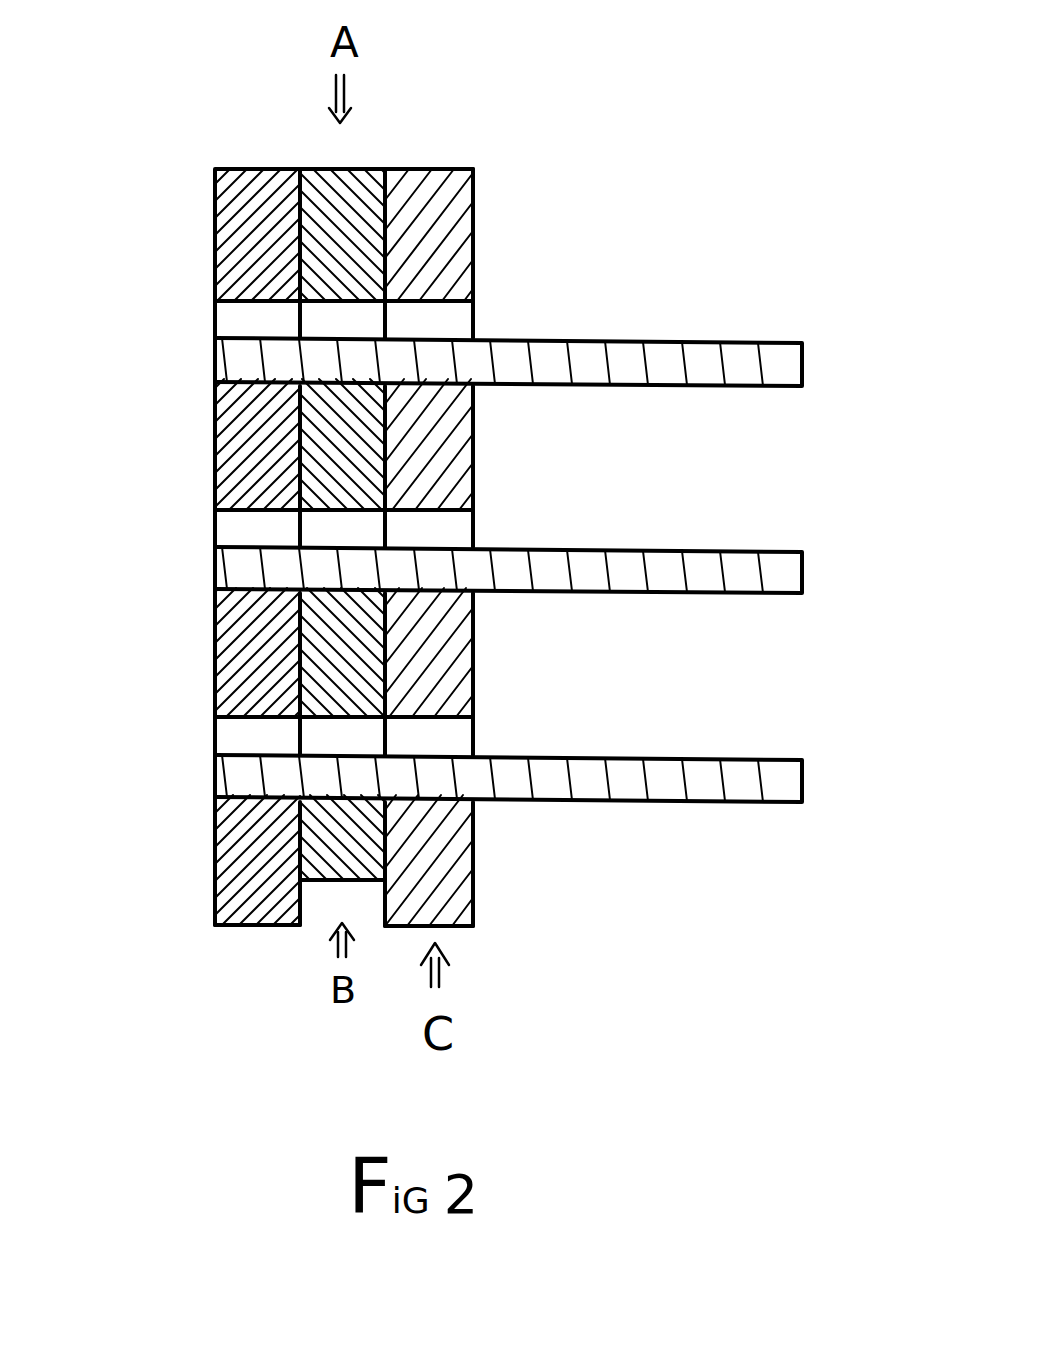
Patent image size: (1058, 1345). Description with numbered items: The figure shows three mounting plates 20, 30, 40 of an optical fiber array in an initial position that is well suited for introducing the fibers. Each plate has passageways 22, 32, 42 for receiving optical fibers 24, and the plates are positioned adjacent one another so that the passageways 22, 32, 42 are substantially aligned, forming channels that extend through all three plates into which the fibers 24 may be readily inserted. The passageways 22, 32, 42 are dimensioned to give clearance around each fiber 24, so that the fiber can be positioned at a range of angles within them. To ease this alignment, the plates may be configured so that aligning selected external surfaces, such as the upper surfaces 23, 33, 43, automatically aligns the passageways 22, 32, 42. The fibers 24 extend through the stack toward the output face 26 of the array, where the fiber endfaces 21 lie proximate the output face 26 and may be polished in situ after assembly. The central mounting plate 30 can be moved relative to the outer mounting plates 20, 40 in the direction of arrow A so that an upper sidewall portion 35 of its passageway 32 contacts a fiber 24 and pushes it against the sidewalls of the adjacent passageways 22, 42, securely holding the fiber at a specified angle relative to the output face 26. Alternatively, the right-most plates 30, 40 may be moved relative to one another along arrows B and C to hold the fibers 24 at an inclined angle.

The mounting plate 20 is at (215, 235).
The fiber endface 21 is at (215, 578).
The passageway 22 is at (237, 318).
The upper surface 23 is at (256, 157).
The optical fiber 24 is at (803, 362).
The output face 26 is at (203, 907).
The central mounting plate 30 is at (333, 170).
The passageway 32 is at (355, 740).
The upper surface 33 is at (393, 150).
The upper sidewall portion 35 is at (347, 313).
The mounting plate 40 is at (475, 225).
The passageway 42 is at (475, 313).
The upper surface 43 is at (463, 162).